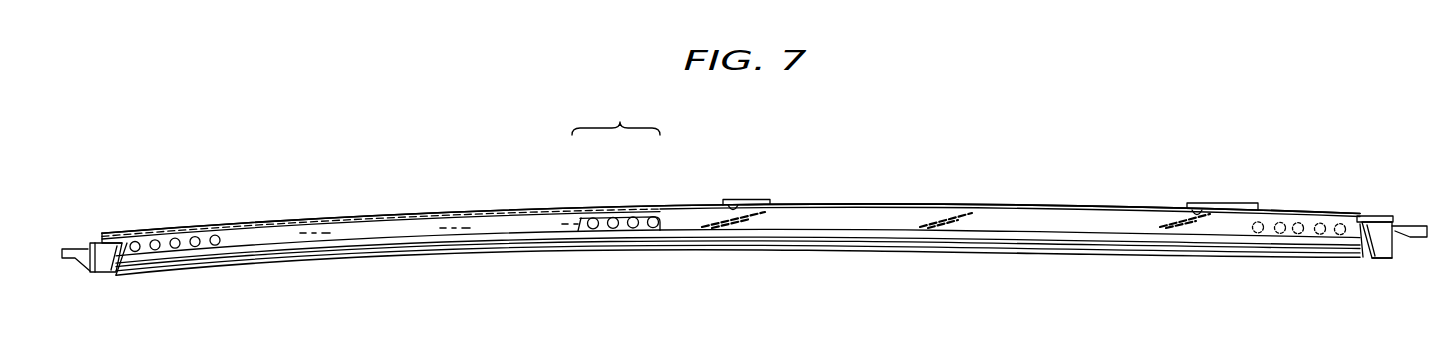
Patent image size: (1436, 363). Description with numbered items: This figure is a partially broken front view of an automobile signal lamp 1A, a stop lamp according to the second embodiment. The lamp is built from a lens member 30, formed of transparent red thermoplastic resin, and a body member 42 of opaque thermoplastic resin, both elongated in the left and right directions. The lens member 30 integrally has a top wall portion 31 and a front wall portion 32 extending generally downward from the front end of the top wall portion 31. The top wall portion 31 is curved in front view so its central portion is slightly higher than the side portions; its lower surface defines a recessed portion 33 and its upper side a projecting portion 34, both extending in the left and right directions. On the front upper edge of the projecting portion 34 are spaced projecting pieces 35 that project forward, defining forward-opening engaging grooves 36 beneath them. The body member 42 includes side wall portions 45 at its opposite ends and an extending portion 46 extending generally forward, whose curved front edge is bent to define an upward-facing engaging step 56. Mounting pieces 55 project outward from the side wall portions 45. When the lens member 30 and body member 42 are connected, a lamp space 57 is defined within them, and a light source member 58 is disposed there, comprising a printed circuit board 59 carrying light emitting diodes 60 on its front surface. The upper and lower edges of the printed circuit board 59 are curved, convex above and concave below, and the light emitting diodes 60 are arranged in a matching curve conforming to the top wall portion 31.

The signal lamp 1A is at (982, 150).
The lens member 30 is at (815, 224).
The top wall portion 31 is at (549, 211).
The front wall portion 32 is at (1010, 224).
The recessed portion 33 is at (452, 221).
The projecting portion 34 is at (391, 207).
The projecting pieces 35 is at (764, 199).
The engaging grooves 36 is at (736, 209).
The body member 42 is at (1378, 261).
The side wall portions 45 is at (86, 244).
The extending portion 46 is at (1077, 254).
The mounting pieces 55 is at (73, 262).
The engaging step 56 is at (1223, 248).
The lamp space 57 is at (522, 229).
The light source member 58 is at (616, 114).
The printed circuit board 59 is at (581, 228).
The light emitting diodes 60 is at (178, 249).